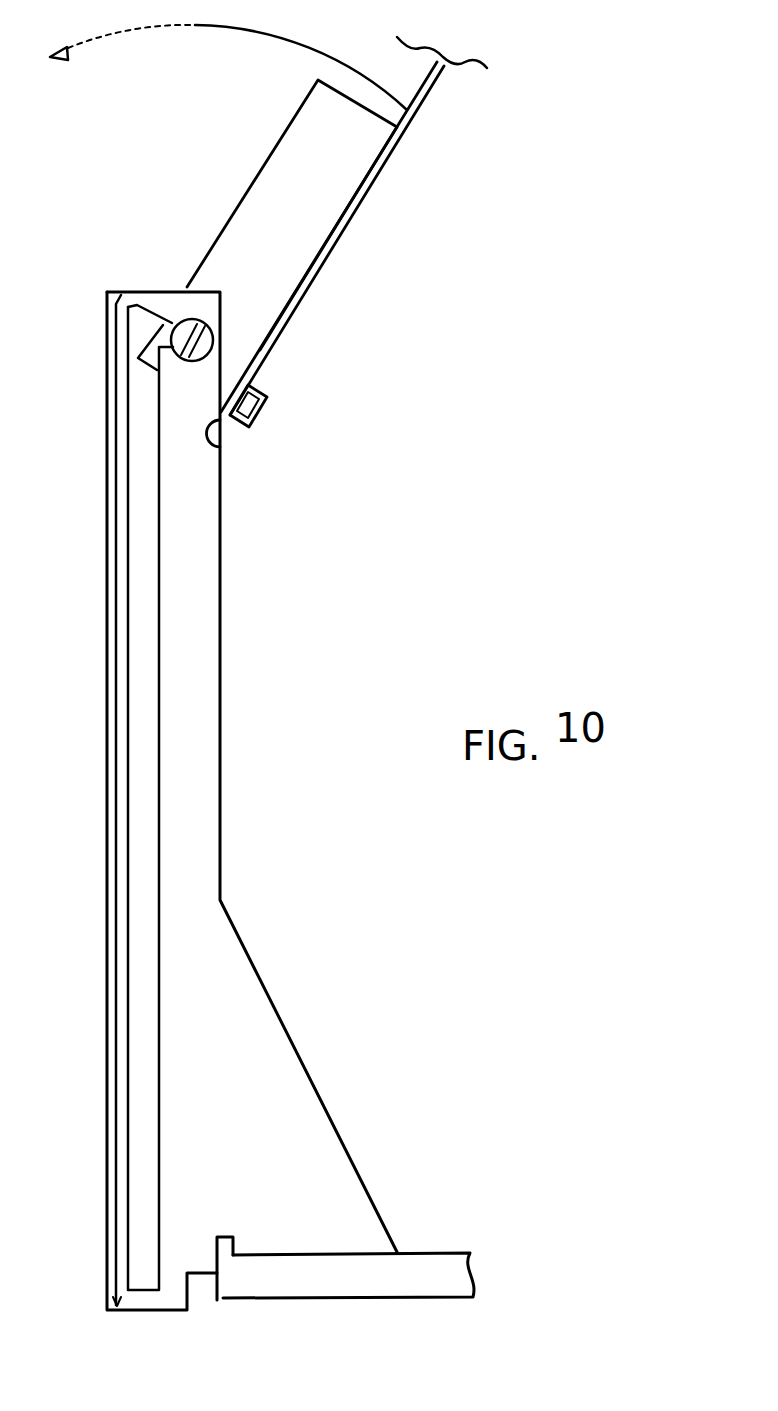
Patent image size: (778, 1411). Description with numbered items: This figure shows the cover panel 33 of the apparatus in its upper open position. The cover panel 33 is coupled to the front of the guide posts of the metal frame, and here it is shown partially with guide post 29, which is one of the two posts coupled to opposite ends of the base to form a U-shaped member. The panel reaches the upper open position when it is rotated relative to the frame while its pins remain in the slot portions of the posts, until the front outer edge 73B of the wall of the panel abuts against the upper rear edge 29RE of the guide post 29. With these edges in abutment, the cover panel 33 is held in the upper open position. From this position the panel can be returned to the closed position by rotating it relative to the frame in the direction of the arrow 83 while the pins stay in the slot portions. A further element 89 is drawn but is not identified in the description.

The guide post 29 is at (218, 603).
The upper rear edge of post 29RE is at (222, 360).
The cover panel 33 is at (323, 270).
The front outer edge of wall 73B is at (220, 447).
The arrow 83 is at (183, 28).
The actuator cylinder 89 is at (243, 197).